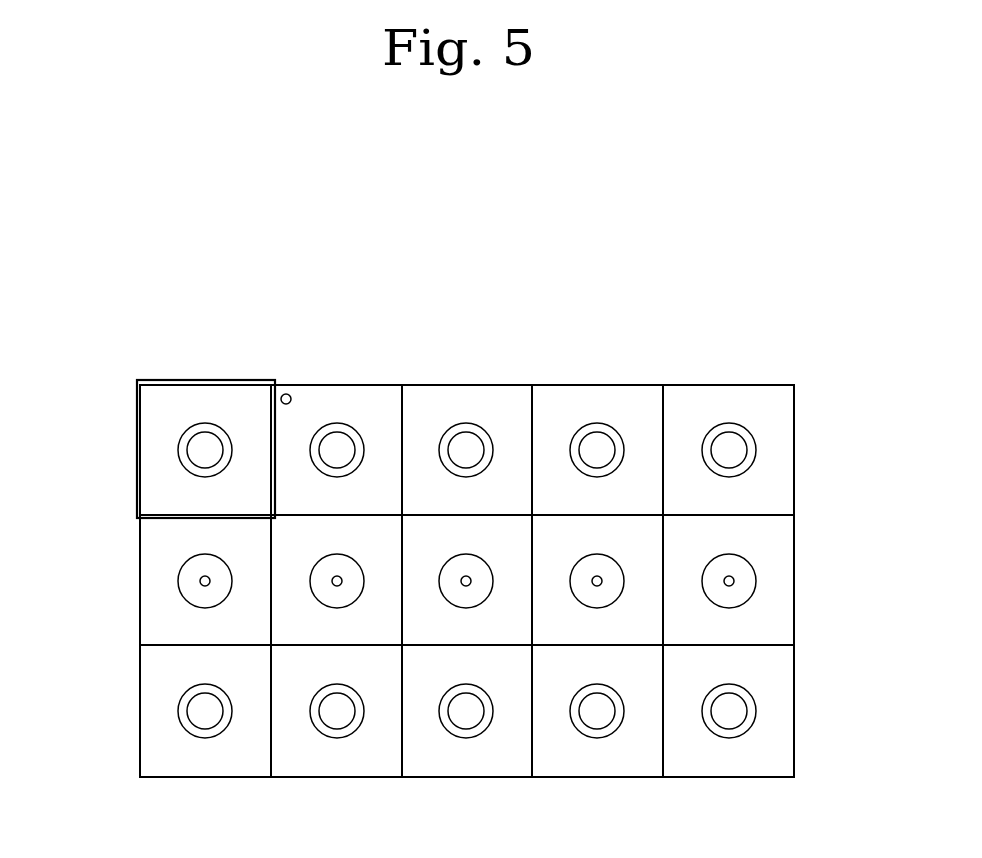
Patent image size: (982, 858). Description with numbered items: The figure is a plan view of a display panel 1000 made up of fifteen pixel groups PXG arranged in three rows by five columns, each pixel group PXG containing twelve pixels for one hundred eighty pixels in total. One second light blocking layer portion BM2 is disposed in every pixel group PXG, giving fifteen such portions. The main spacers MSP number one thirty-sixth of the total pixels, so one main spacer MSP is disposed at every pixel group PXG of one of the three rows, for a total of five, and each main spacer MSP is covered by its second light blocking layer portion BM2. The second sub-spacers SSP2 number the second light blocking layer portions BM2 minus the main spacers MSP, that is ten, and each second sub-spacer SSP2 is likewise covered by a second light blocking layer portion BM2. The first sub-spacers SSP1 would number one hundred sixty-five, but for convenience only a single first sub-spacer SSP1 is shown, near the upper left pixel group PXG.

The display panel 1000 is at (821, 303).
The pixel group PXG is at (137, 447).
The first sub-spacer SSP1 is at (286, 394).
The second sub-spacer SSP2 is at (331, 428).
The second light blocking layer portion BM2 is at (350, 425).
The main spacer MSP is at (332, 585).